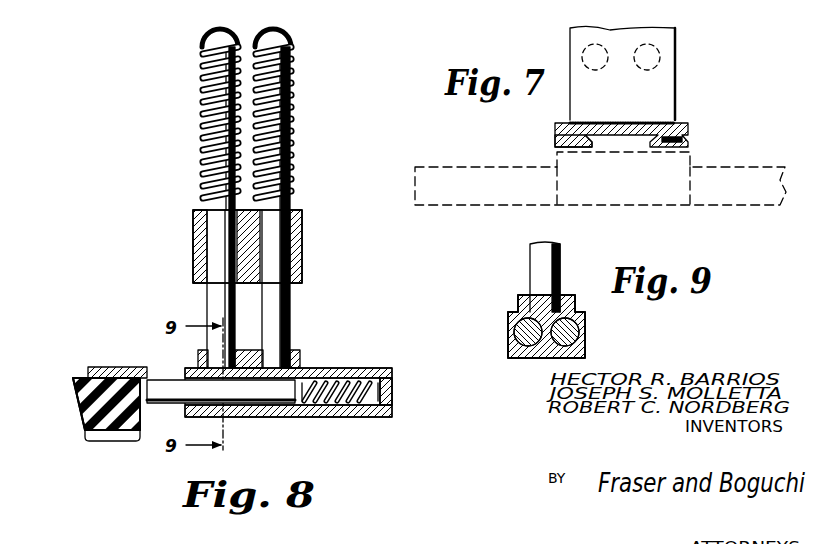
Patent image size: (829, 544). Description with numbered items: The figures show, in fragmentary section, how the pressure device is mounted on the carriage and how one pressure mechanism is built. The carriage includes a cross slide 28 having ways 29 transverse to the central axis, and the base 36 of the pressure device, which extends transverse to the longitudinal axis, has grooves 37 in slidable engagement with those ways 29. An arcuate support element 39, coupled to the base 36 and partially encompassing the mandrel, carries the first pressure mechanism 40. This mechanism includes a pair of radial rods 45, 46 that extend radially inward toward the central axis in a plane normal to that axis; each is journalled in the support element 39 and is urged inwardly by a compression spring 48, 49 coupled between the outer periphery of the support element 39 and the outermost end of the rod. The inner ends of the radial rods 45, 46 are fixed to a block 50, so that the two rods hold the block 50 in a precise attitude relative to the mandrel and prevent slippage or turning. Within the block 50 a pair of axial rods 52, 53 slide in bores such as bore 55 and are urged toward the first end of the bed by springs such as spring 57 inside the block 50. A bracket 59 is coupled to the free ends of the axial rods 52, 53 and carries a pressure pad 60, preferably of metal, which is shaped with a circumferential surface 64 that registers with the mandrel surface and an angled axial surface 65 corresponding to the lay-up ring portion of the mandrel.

In FIG. 7, the cross slide 28 is at (488, 167).
In FIG. 7, the ways 29 is at (626, 150).
In FIG. 7, the base 36 is at (688, 124).
In FIG. 7, the grooves 37 is at (592, 140).
In FIG. 8, the arcuate support element 39 is at (302, 214).
In FIG. 7, the arcuate support element 39 is at (676, 74).
In FIG. 8, the first pressure mechanism 40 is at (314, 268).
In FIG. 8, the radial rod 45 is at (207, 298).
In FIG. 9, the radial rod 45 is at (560, 258).
In FIG. 8, the radial rod 46 is at (290, 306).
In FIG. 8, the compression spring 48 is at (206, 100).
In FIG. 8, the compression spring 49 is at (290, 110).
In FIG. 8, the block 50 is at (322, 368).
In FIG. 9, the block 50 is at (518, 305).
In FIG. 8, the axial rod 52 is at (268, 405).
In FIG. 9, the axial rod 52 is at (585, 350).
In FIG. 9, the axial rod 53 is at (515, 342).
In FIG. 8, the bore 55 is at (364, 368).
In FIG. 9, the bore 55 is at (585, 320).
In FIG. 8, the spring 57 is at (392, 398).
In FIG. 8, the bracket 59 is at (116, 367).
In FIG. 8, the pressure pad 60 is at (86, 375).
In FIG. 8, the circumferential surface 64 is at (124, 433).
In FIG. 8, the axial surface 65 is at (84, 412).